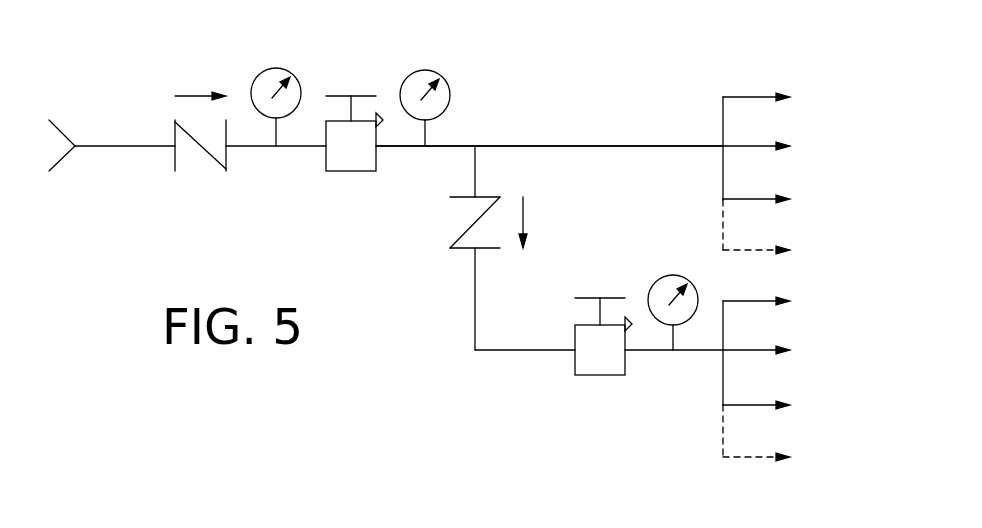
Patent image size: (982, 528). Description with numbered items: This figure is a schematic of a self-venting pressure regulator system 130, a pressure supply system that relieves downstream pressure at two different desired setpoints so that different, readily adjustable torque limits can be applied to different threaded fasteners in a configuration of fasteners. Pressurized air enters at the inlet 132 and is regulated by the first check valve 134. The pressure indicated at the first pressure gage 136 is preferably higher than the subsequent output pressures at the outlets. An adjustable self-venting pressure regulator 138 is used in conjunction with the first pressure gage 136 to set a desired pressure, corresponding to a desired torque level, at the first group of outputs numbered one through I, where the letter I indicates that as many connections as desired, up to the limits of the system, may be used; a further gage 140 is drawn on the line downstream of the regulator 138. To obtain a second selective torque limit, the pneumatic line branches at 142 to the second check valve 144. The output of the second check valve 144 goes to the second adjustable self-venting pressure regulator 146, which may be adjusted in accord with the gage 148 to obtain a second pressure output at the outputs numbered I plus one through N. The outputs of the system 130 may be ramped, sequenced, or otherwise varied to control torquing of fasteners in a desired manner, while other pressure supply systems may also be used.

The self-venting pressure regulator system 130 is at (570, 70).
The inlet 132 is at (62, 130).
The first check valve 134 is at (200, 169).
The first pressure gage 136 is at (283, 68).
The adjustable self-venting pressure regulator 138 is at (357, 162).
The pressure gauge 140 is at (440, 70).
The branch of the pneumatic line 142 is at (478, 172).
The second check valve 144 is at (460, 213).
The second adjustable self-venting pressure regulator 146 is at (595, 365).
The gage 148 is at (683, 276).